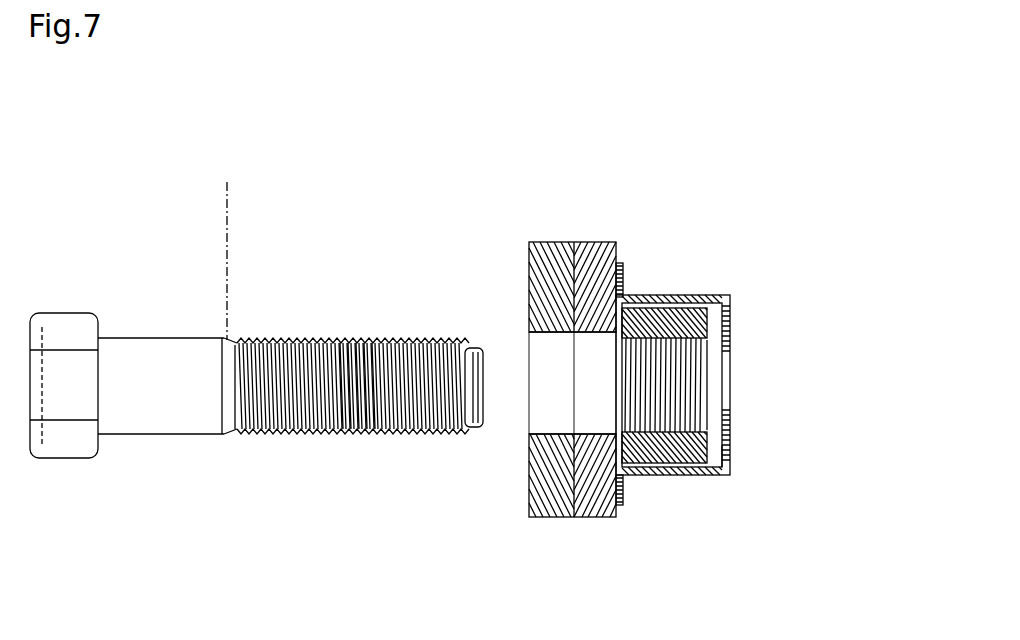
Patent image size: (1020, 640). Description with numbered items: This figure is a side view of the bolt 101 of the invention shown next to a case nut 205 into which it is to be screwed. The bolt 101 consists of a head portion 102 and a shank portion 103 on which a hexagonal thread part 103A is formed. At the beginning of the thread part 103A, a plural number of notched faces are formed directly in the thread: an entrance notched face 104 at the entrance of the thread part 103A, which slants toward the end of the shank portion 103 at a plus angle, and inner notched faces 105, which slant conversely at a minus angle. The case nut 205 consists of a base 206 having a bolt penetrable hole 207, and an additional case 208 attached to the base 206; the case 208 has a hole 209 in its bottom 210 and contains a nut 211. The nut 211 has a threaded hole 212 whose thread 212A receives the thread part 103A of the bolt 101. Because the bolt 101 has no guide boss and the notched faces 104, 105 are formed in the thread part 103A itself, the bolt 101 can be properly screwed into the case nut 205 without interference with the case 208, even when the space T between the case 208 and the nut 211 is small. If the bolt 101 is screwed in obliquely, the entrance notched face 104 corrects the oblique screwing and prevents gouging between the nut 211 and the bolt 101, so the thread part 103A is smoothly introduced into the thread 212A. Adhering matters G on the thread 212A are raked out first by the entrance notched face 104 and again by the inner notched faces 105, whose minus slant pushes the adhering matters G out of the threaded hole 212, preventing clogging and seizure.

The bolt 101 is at (220, 246).
The head portion 102 is at (87, 313).
The shank portion 103 is at (289, 340).
The thread part 103A is at (365, 340).
The entrance notched face 104 is at (470, 425).
The inner notched faces 105 is at (470, 343).
The case nut 205 is at (635, 277).
The base 206 is at (562, 242).
The bolt penetrable hole 207 is at (527, 428).
The case 208 is at (676, 292).
The hole 209 is at (733, 332).
The bottom 210 is at (733, 442).
The nut 211 is at (653, 462).
The threaded hole 212 is at (622, 396).
The thread 212A is at (622, 360).
The adhering matters G is at (685, 407).
The space T is at (713, 450).